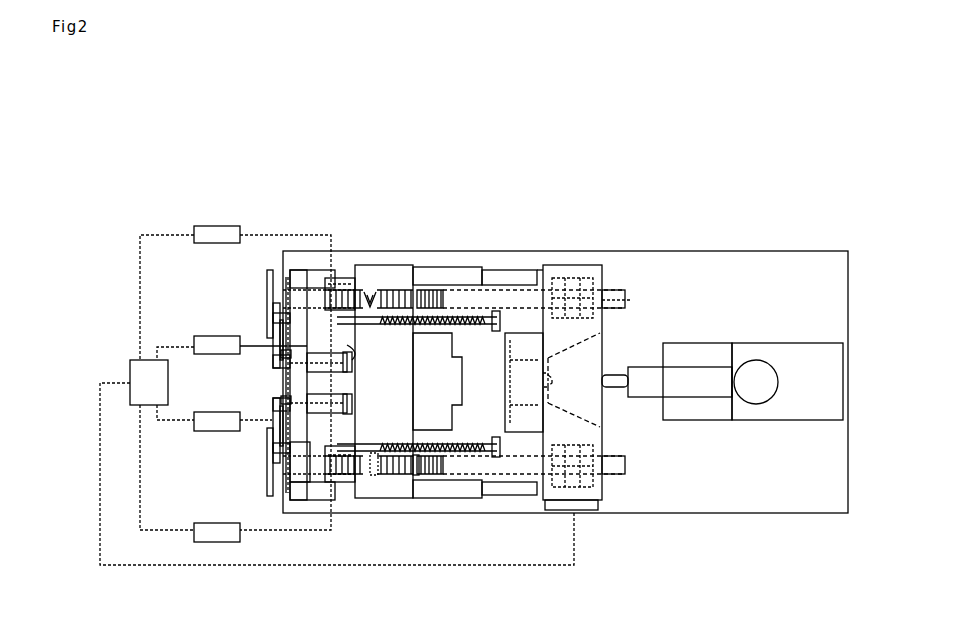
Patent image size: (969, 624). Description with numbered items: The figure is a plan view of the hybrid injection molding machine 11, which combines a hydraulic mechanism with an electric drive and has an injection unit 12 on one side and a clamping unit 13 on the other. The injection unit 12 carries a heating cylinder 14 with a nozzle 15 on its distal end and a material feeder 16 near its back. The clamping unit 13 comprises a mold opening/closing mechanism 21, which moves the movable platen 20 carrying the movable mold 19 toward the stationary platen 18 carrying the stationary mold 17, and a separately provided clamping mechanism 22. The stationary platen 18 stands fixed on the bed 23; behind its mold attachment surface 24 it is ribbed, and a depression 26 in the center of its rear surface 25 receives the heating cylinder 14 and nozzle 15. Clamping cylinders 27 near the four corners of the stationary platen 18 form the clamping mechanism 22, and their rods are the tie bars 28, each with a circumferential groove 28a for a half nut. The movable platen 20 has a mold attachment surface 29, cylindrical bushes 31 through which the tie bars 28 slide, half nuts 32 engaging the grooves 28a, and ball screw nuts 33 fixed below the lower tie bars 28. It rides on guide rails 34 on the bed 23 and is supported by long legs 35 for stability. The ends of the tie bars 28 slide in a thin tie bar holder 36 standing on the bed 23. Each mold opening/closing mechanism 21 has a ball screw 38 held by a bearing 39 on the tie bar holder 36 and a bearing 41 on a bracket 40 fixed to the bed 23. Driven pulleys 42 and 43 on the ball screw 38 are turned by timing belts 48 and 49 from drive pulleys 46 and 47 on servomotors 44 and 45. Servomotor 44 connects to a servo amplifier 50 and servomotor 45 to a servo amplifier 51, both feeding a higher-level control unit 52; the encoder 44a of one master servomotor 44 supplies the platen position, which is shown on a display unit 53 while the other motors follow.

The injection molding machine 11 is at (615, 178).
The injection unit 12 is at (745, 320).
The clamping unit 13 is at (412, 210).
The heating cylinder 14 is at (694, 375).
The nozzle 15 is at (616, 375).
The material feeder 16 is at (758, 374).
The stationary mold 17 is at (526, 382).
The stationary platen 18 is at (572, 268).
The movable mold 19 is at (437, 381).
The movable platen 20 is at (400, 285).
The mold opening/closing mechanism 21 is at (362, 290).
The clamping mechanism 22 is at (606, 285).
The bed 23 is at (822, 318).
The mold attachment surface 24 is at (538, 300).
The rear surface 25 is at (605, 325).
The depression 26 is at (590, 405).
The clamping cylinders 27 is at (585, 300).
The tie bars 28 is at (516, 290).
The groove 28a is at (446, 478).
The mold attachment surface 29 is at (420, 476).
The bushes 31 is at (394, 289).
The half nuts 32 is at (340, 278).
The ball screw nuts 33 is at (370, 482).
The guide rails 34 is at (508, 285).
The legs 35 is at (466, 268).
The tie bar holder 36 is at (303, 302).
The ball screw 38 is at (452, 300).
The bearing 39 is at (300, 488).
The bracket 40 is at (496, 331).
The bearing 41 is at (492, 445).
The driven pulley 42 is at (277, 335).
The driven pulley 43 is at (275, 318).
The servomotor 44 is at (330, 372).
The encoder 44a is at (352, 338).
The servomotor 45 is at (312, 278).
The drive pulley 46 is at (281, 354).
The drive pulley 47 is at (268, 280).
The timing belt 48 is at (279, 358).
The timing belt 49 is at (270, 300).
The servo amplifier 50 is at (210, 345).
The servo amplifier 51 is at (217, 226).
The control unit 52 is at (138, 368).
The display unit 53 is at (580, 510).